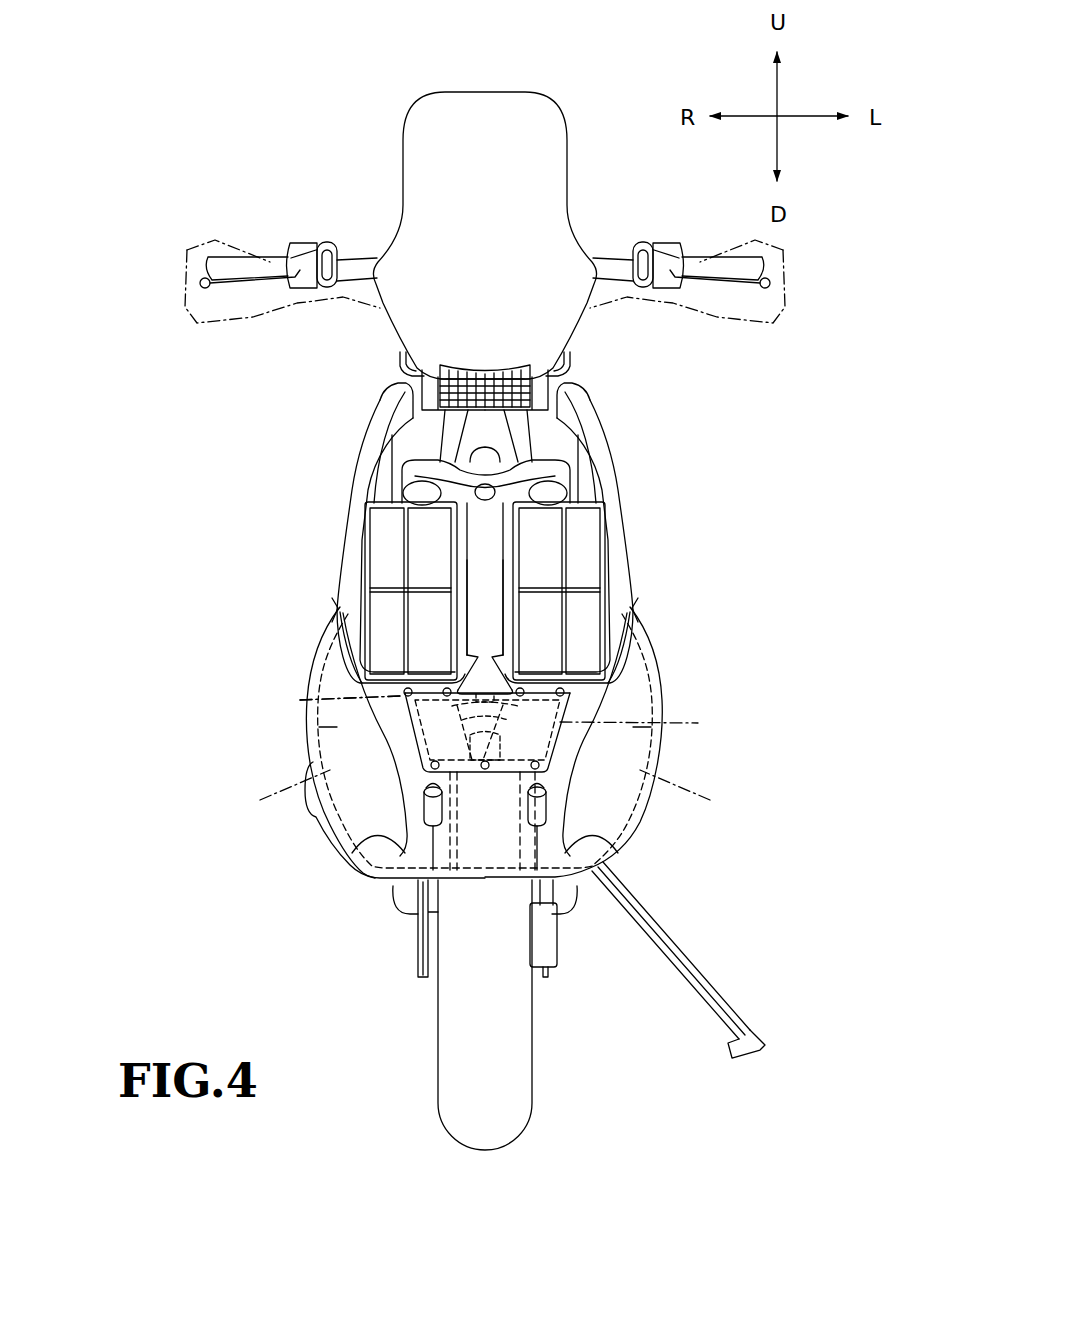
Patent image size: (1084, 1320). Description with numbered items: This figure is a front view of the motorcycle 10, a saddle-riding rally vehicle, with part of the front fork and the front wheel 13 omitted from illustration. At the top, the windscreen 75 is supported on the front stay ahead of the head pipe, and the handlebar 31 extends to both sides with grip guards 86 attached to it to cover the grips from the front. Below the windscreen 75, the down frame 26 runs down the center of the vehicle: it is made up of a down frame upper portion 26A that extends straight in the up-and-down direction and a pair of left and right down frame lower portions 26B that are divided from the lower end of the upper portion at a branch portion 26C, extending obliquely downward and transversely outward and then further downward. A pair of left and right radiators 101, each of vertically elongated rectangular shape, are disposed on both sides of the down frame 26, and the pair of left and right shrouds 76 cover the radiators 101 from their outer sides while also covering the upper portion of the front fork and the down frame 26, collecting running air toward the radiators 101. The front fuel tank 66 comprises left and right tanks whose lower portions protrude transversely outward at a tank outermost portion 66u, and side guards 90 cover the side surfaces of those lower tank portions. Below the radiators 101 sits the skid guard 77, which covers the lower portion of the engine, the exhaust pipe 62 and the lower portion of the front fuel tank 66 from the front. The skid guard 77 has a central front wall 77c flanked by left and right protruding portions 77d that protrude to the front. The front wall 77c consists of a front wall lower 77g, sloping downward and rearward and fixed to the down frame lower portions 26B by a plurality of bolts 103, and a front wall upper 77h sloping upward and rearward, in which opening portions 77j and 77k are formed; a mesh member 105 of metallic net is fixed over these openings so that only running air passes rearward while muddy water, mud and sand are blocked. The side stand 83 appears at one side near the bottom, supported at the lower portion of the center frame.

The motorcycle 10 is at (300, 115).
The windscreen 75 is at (483, 103).
The handlebar 31 is at (275, 264).
The grip guards 86 is at (205, 233).
The front fuel tank 66 is at (418, 430).
The shrouds 76 is at (380, 415).
The down frame 26 is at (462, 537).
The down frame upper portion 26A is at (492, 612).
The down frame lower portions 26B is at (455, 700).
The branch portion 26C is at (470, 660).
The radiators 101 is at (380, 553).
The side guards 90 is at (325, 614).
The skid guard 77 is at (316, 738).
The tank outermost portion 66u is at (365, 683).
The protruding portions 77d is at (358, 749).
The opening portions 77j is at (345, 760).
The mesh member 105 is at (550, 754).
The front wall upper 77h is at (438, 714).
The opening portion 77k is at (540, 712).
The front wall lower 77g is at (522, 834).
The bolts 103 is at (547, 816).
The front wall 77c is at (477, 884).
The exhaust pipe 62 is at (546, 930).
The front wheel 13 is at (500, 1130).
The side stand 83 is at (707, 990).